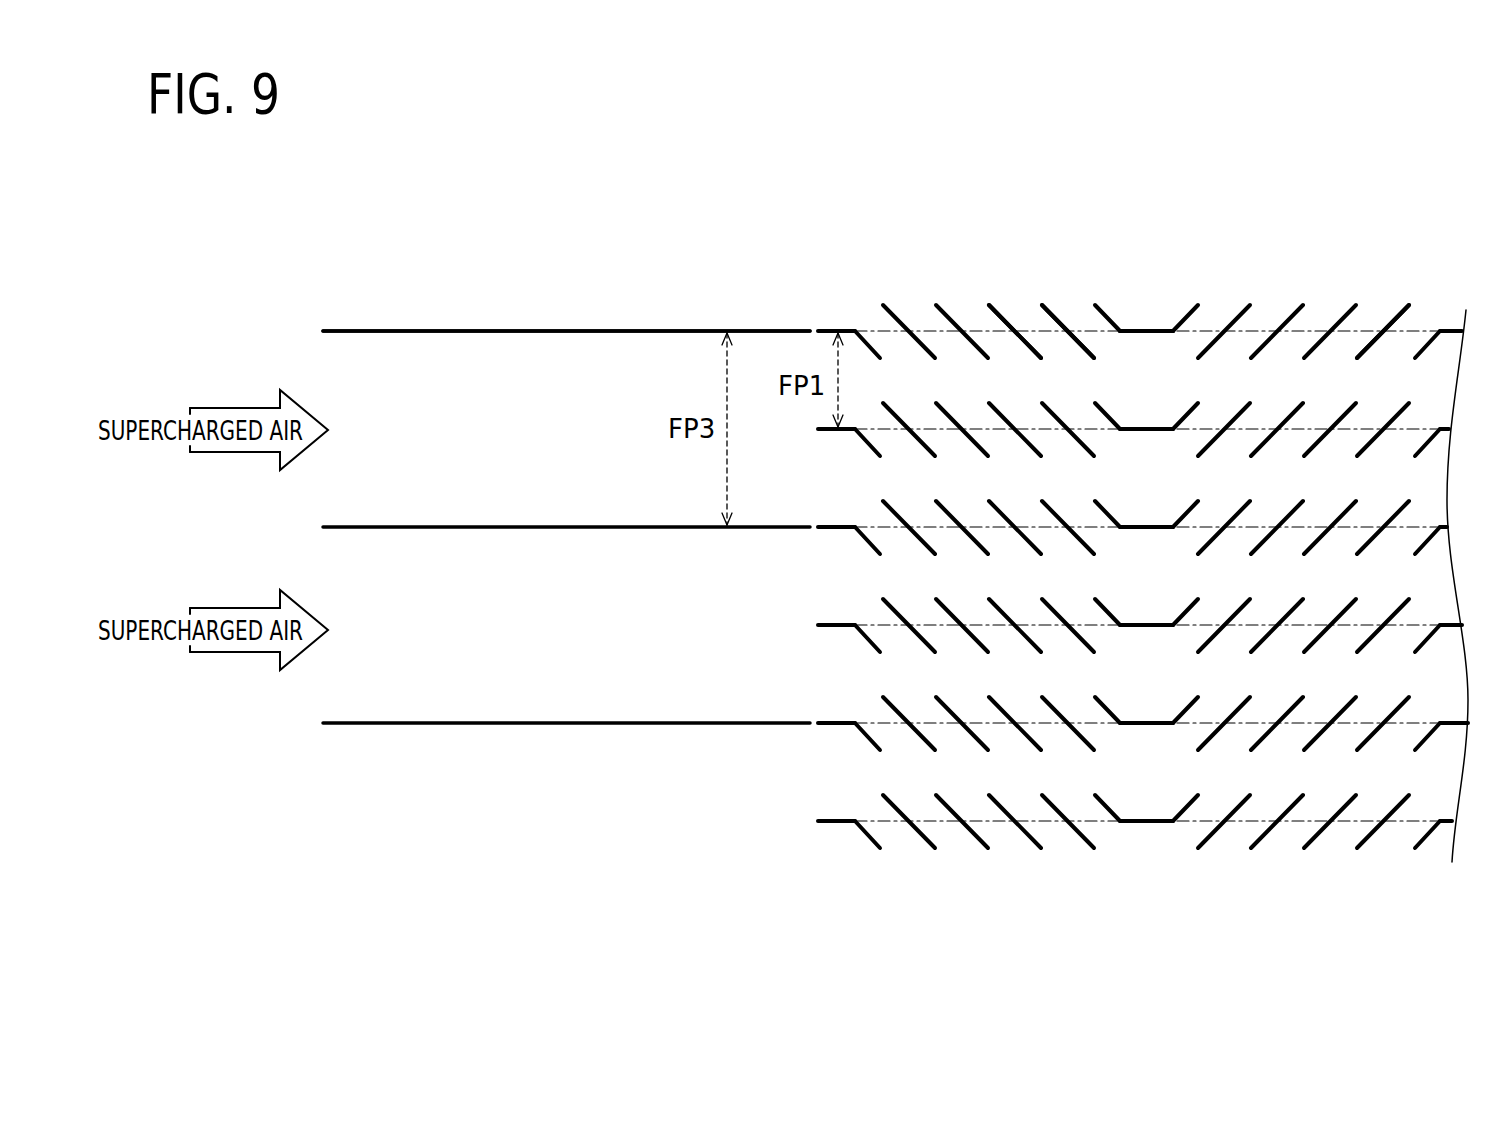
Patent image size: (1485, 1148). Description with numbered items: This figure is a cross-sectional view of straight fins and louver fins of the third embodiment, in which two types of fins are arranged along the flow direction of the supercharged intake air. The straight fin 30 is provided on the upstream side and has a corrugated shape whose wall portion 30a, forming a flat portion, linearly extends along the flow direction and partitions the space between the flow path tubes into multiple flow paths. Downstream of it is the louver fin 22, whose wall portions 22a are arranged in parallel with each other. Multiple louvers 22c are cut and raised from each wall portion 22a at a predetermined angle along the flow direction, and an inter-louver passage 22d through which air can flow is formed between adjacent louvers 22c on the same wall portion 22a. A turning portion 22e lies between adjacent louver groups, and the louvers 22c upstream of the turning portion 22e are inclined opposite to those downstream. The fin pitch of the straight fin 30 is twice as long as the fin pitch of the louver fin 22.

The straight fin 30 is at (325, 881).
The wall portion 30a is at (403, 331).
The louver fin 22 is at (818, 881).
The wall portion 22a is at (1367, 332).
The louver 22c is at (1072, 315).
The inter-louver passage 22d is at (1025, 318).
The turning portion 22e is at (1145, 330).